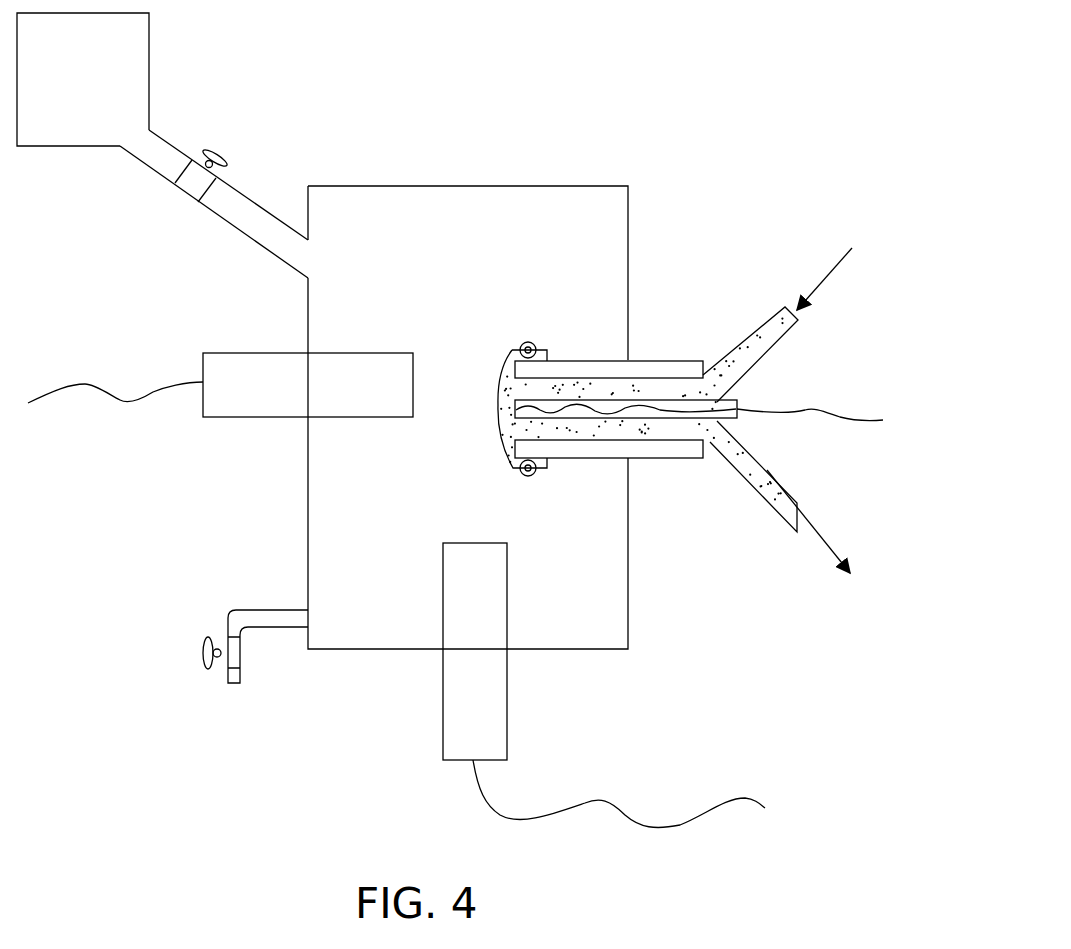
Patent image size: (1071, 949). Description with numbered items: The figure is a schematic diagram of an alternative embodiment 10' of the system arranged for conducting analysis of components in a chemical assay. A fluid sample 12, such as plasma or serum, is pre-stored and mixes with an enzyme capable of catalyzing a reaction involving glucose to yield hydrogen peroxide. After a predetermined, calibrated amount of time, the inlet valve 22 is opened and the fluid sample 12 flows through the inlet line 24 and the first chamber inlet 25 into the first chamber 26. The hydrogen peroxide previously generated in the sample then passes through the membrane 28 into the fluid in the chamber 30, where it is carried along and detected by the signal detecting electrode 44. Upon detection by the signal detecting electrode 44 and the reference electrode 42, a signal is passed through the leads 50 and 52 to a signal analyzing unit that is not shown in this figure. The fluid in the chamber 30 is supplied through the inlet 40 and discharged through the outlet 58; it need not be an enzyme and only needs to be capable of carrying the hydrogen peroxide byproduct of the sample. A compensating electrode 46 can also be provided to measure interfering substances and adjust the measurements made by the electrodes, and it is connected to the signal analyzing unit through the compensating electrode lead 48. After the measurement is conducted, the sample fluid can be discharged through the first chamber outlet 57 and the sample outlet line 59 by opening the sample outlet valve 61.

The alternative embodiment 10' is at (623, 112).
The fluid sample 12 is at (149, 52).
The inlet valve 22 is at (221, 156).
The inlet line 24 is at (250, 202).
The first chamber inlet 25 is at (306, 242).
The first chamber 26 is at (379, 209).
The membrane 28 is at (497, 404).
The chamber 30 is at (507, 446).
The inlet 40 is at (748, 338).
The reference electrode 42 is at (470, 693).
The signal detecting electrode 44 is at (515, 404).
The compensating electrode 46 is at (268, 405).
The compensating electrode lead 48 is at (83, 383).
The lead 50 is at (655, 827).
The lead 52 is at (812, 407).
The first chamber outlet 57 is at (305, 610).
The outlet 58 is at (748, 482).
The sample outlet line 59 is at (258, 627).
The sample outlet valve 61 is at (202, 654).